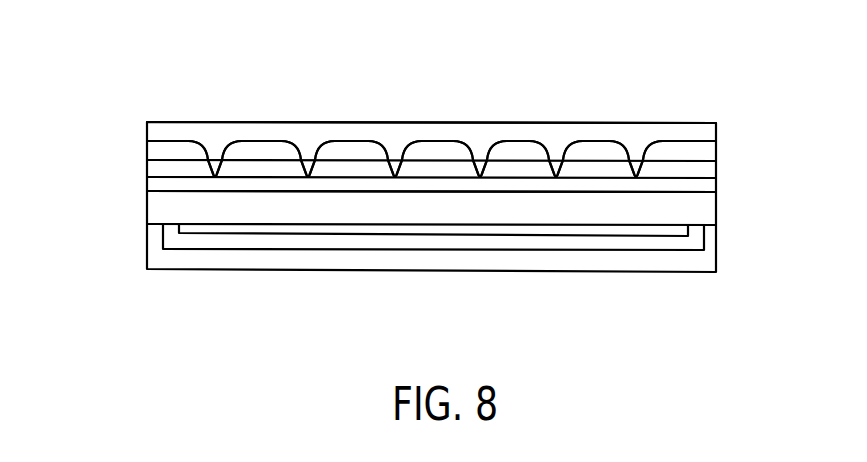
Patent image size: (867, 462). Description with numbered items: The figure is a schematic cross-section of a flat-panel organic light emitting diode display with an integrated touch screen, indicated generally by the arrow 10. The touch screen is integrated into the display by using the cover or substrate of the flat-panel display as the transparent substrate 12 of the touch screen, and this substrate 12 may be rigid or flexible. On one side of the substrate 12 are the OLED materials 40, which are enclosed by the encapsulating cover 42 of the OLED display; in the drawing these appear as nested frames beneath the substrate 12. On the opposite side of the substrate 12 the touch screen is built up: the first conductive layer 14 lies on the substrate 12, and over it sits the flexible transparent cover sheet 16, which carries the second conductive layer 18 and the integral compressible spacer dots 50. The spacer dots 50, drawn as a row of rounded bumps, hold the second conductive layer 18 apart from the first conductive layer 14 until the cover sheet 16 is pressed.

The display device 10 is at (507, 77).
The transparent substrate 12 is at (157, 217).
The first conductive layer 14 is at (163, 183).
The flexible transparent cover sheet 16 is at (172, 138).
The second conductive layer 18 is at (160, 153).
The OLED materials 40 is at (418, 235).
The encapsulating cover 42 is at (200, 252).
The integral compressible spacer dots 50 is at (395, 155).